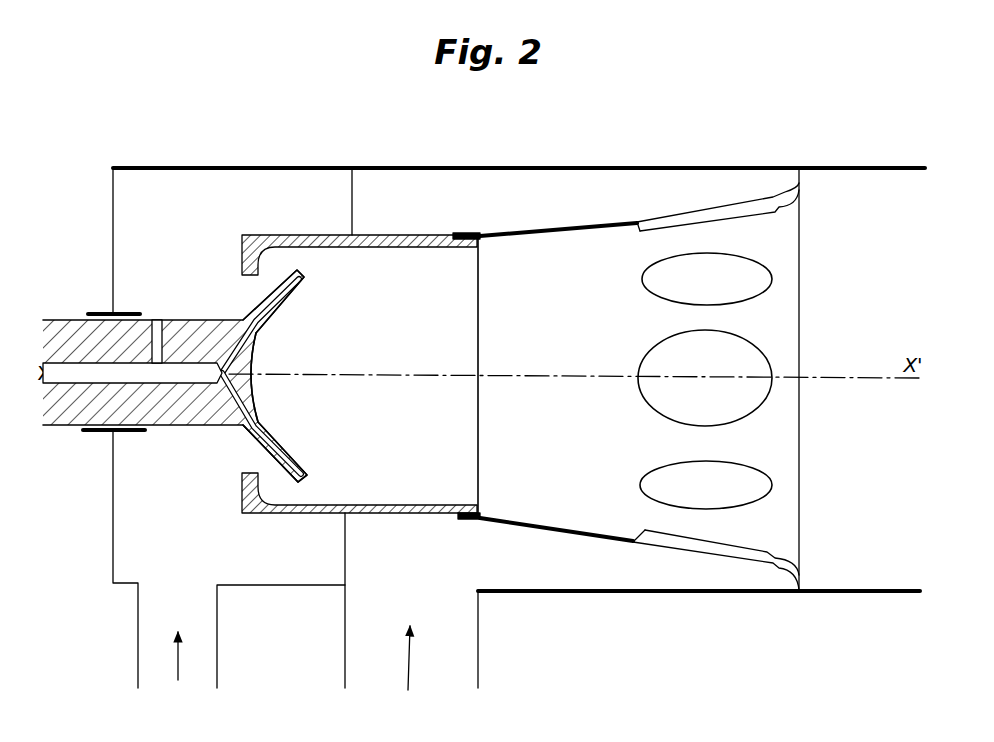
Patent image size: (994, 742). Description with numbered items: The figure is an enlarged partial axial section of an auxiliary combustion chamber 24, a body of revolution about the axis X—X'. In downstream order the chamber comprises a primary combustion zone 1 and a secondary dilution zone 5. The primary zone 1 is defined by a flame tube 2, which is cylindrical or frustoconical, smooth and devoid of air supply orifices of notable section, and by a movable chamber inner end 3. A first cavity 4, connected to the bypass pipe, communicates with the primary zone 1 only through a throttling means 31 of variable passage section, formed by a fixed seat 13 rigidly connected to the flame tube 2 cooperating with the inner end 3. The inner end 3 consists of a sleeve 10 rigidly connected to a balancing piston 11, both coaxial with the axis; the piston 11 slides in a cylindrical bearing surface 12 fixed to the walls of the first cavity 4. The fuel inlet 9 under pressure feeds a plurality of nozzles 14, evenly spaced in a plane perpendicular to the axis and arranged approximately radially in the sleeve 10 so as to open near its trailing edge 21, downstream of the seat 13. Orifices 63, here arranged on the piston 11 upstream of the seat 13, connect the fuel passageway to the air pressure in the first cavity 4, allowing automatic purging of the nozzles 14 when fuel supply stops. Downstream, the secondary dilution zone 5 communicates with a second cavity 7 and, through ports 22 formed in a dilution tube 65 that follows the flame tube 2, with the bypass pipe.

The primary combustion zone 1 is at (458, 410).
The flame tube 2 is at (425, 515).
The chamber inner end 3 is at (279, 326).
The first cavity 4 is at (172, 268).
The secondary dilution zone 5 is at (895, 507).
The second cavity 7 is at (607, 565).
The inlet of fuel under pressure 9 is at (97, 366).
The sleeve 10 is at (282, 433).
The balancing piston 11 is at (187, 415).
The cylindrical bearing surface 12 is at (105, 433).
The fixed seat 13 is at (281, 466).
The nozzles 14 is at (263, 420).
The trailing edge 21 is at (303, 271).
The ports 22 is at (765, 297).
The auxiliary combustion chamber 24 is at (336, 160).
The throttling means 31 is at (279, 492).
The orifices 63 is at (157, 320).
The dilution tube 65 is at (560, 222).